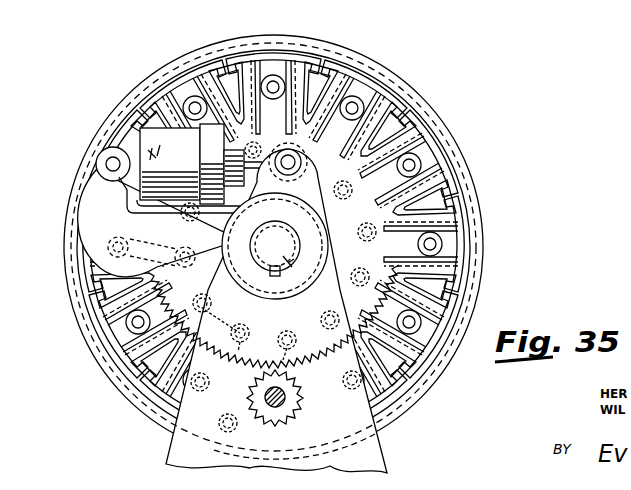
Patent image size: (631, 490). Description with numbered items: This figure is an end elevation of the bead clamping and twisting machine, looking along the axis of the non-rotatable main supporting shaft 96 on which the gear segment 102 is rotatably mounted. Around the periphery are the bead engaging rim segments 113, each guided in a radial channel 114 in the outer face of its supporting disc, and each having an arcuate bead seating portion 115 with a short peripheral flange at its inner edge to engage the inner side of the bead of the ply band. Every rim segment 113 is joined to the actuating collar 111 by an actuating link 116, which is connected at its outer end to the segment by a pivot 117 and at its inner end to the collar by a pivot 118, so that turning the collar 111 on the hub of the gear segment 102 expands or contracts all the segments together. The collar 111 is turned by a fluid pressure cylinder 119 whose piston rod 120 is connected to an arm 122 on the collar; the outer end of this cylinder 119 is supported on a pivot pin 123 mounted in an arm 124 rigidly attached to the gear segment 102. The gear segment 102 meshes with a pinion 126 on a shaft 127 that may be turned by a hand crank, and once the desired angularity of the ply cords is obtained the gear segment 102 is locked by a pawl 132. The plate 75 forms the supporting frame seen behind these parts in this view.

The mounting plate 75 is at (180, 452).
The main supporting shaft 96 is at (285, 286).
The gear segment 102 is at (343, 382).
The actuating collar 111 is at (370, 222).
The rim segments 113 is at (178, 80).
The radial channel 114 is at (358, 147).
The arcuate bead seating portion 115 is at (125, 138).
The actuating link 116 is at (272, 110).
The pivot 117 is at (195, 96).
The pivot 118 is at (343, 199).
The fluid pressure cylinder 119 is at (132, 133).
The piston rod 120 is at (199, 150).
The arm 122 is at (285, 192).
The pivot pin 123 is at (106, 163).
The arm 124 is at (90, 220).
The pinion 126 is at (297, 398).
The shaft 127 is at (283, 400).
The pawl 132 is at (275, 407).